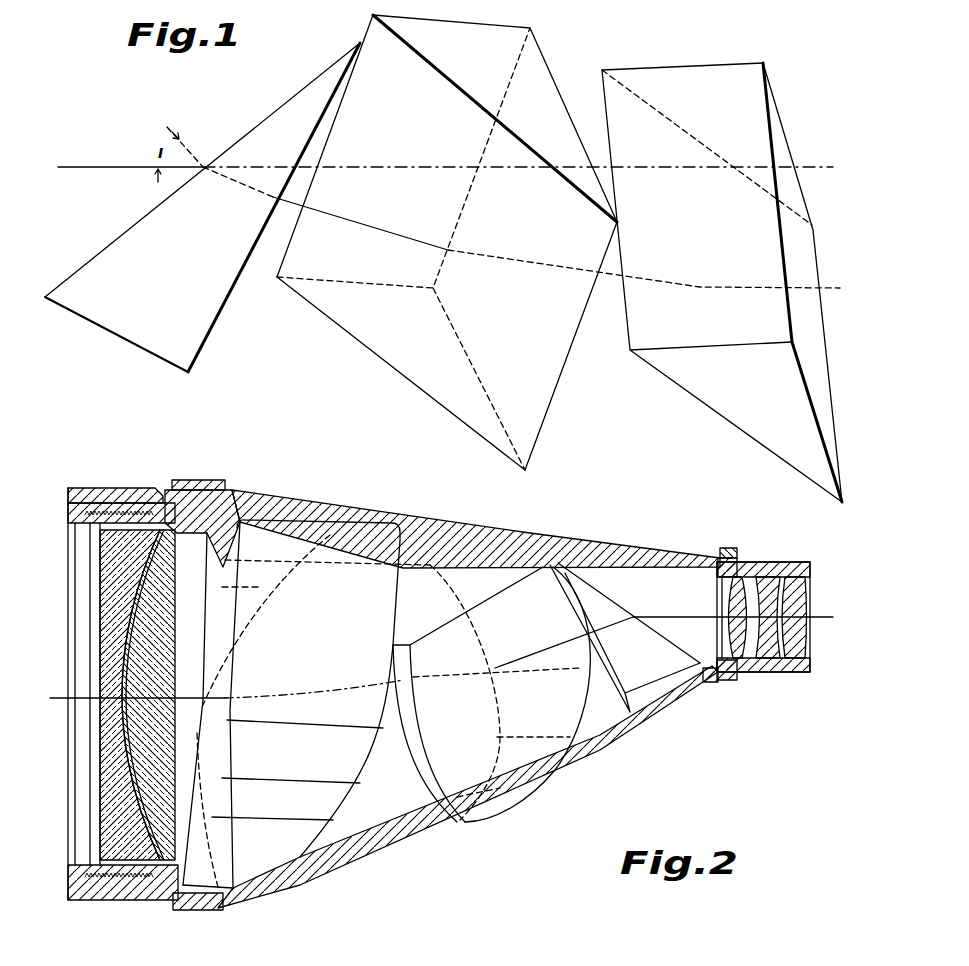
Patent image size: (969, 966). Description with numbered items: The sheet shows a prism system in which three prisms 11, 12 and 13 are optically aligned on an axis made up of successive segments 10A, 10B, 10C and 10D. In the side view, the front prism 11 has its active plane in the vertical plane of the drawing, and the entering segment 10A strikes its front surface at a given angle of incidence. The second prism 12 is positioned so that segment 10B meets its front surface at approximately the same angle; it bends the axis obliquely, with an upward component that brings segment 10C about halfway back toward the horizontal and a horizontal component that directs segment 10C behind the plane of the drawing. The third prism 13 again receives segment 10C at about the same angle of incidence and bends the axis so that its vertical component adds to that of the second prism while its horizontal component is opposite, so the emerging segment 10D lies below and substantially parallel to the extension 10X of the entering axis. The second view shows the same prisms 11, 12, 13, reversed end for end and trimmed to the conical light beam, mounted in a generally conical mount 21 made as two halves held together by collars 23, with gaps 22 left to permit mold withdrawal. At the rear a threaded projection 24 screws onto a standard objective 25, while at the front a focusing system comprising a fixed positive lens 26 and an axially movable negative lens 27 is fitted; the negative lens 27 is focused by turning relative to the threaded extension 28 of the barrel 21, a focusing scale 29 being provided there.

In FIG. 1, the optical axis segment 10A is at (100, 170).
In FIG. 2, the optical axis segment 10A is at (655, 612).
In FIG. 1, the optical axis segment 10B is at (287, 200).
In FIG. 1, the optical axis segment 10C is at (607, 273).
In FIG. 1, the optical axis segment 10D is at (833, 288).
In FIG. 2, the optical axis segment 10D is at (190, 700).
In FIG. 1, the extension of the entering axis 10X is at (815, 166).
In FIG. 1, the front prism 11 is at (147, 338).
In FIG. 2, the front prism 11 is at (629, 632).
In FIG. 1, the second prism 12 is at (435, 242).
In FIG. 2, the second prism 12 is at (513, 777).
In FIG. 1, the third prism 13 is at (722, 282).
In FIG. 2, the third prism 13 is at (305, 731).
In FIG. 2, the conical mount 21 is at (405, 567).
In FIG. 2, the gaps 22 is at (210, 913).
In FIG. 2, the collars 23 is at (190, 480).
In FIG. 2, the threaded projection 24 is at (722, 553).
In FIG. 2, the standard objective 25 is at (783, 570).
In FIG. 2, the fixed positive lens 26 is at (197, 498).
In FIG. 2, the axially movable negative lens 27 is at (110, 493).
In FIG. 2, the threaded extension 28 is at (140, 880).
In FIG. 2, the focusing scale 29 is at (150, 490).